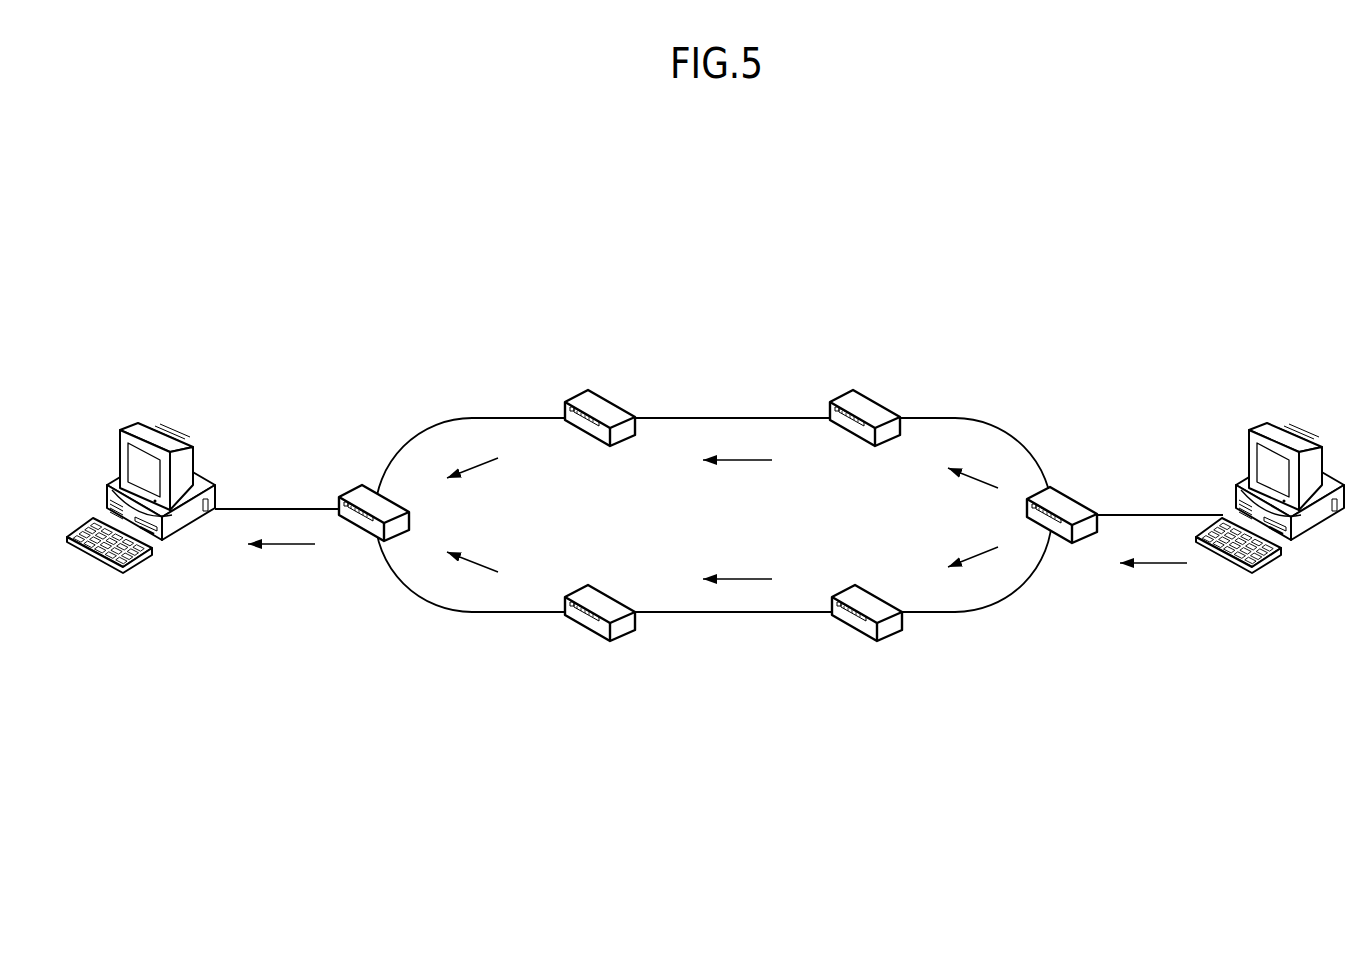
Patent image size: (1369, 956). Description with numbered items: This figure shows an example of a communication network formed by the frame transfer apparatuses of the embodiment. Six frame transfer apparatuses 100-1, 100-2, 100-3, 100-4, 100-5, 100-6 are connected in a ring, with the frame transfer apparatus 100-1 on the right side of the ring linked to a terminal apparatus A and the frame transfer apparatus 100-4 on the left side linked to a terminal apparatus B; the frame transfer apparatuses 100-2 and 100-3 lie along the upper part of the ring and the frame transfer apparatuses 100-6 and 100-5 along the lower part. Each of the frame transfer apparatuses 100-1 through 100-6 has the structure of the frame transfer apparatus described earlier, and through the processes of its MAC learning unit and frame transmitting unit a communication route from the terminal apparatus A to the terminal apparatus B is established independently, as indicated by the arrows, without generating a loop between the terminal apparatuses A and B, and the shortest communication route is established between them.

The frame transfer apparatus 100-1 is at (1082, 500).
The frame transfer apparatus 100-2 is at (865, 401).
The frame transfer apparatus 100-3 is at (600, 401).
The frame transfer apparatus 100-4 is at (338, 499).
The frame transfer apparatus 100-5 is at (600, 634).
The frame transfer apparatus 100-6 is at (867, 634).
The terminal apparatus A is at (1303, 540).
The terminal apparatus B is at (185, 540).